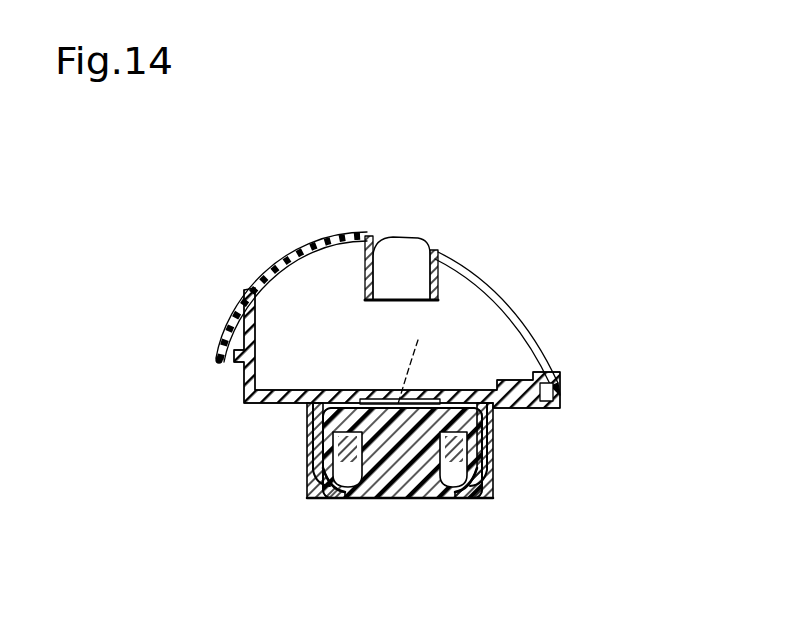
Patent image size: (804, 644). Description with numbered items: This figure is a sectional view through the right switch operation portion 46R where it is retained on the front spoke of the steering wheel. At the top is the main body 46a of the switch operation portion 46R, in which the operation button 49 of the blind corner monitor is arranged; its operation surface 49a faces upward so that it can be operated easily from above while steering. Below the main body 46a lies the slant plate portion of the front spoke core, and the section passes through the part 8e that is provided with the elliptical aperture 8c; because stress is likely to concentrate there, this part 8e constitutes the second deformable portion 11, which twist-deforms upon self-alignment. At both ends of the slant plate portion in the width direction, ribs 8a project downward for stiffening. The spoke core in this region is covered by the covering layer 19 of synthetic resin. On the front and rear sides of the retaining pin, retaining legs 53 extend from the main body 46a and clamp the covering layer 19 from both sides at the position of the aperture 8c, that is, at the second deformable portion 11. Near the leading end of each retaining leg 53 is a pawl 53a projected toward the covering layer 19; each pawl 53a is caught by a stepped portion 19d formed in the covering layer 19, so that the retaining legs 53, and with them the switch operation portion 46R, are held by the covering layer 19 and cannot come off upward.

The right switch operation portion 46R is at (478, 270).
The main body 46a is at (524, 313).
The operation button 49 is at (402, 263).
The operation surface 49a is at (383, 232).
The part of slant plate portion 8e is at (354, 404).
The second deformable portion 11 is at (397, 347).
The elliptical aperture 8c is at (420, 354).
The covering layer 19 is at (402, 483).
The stepped portion 19d is at (318, 455).
The retaining leg 53 is at (320, 434).
The pawl 53a is at (323, 502).
The rib 8a is at (347, 492).